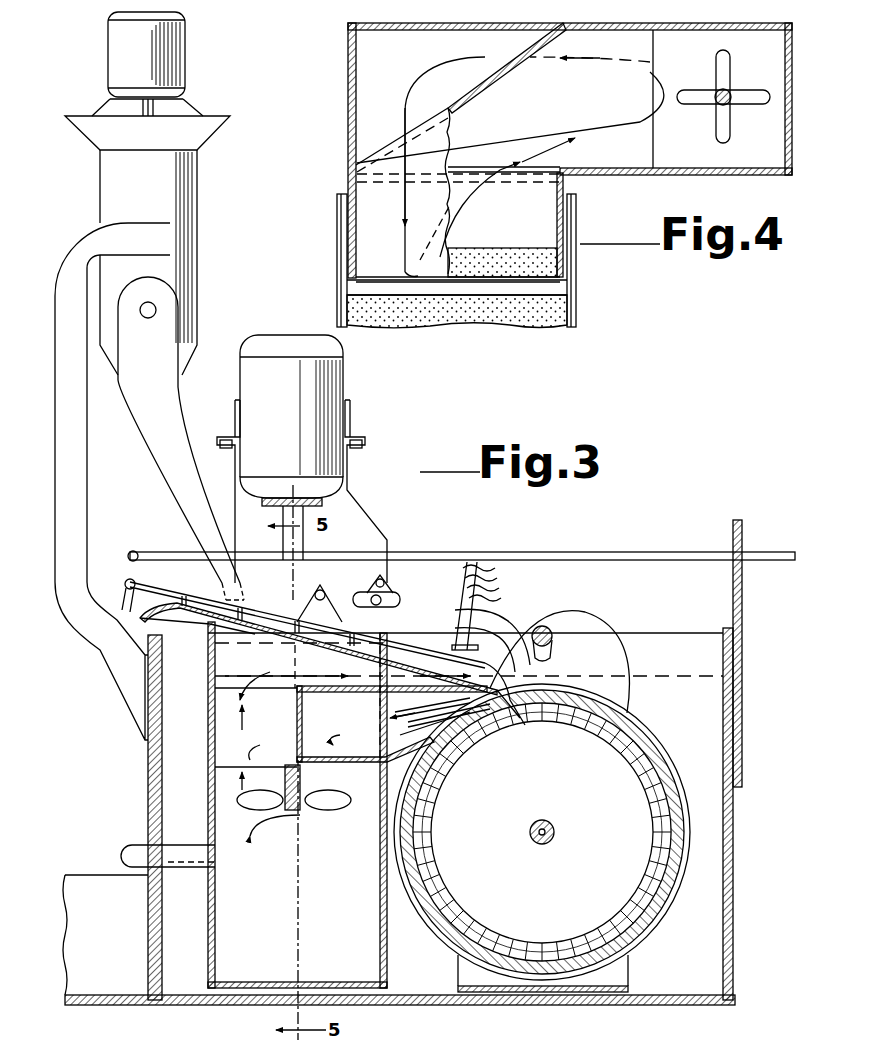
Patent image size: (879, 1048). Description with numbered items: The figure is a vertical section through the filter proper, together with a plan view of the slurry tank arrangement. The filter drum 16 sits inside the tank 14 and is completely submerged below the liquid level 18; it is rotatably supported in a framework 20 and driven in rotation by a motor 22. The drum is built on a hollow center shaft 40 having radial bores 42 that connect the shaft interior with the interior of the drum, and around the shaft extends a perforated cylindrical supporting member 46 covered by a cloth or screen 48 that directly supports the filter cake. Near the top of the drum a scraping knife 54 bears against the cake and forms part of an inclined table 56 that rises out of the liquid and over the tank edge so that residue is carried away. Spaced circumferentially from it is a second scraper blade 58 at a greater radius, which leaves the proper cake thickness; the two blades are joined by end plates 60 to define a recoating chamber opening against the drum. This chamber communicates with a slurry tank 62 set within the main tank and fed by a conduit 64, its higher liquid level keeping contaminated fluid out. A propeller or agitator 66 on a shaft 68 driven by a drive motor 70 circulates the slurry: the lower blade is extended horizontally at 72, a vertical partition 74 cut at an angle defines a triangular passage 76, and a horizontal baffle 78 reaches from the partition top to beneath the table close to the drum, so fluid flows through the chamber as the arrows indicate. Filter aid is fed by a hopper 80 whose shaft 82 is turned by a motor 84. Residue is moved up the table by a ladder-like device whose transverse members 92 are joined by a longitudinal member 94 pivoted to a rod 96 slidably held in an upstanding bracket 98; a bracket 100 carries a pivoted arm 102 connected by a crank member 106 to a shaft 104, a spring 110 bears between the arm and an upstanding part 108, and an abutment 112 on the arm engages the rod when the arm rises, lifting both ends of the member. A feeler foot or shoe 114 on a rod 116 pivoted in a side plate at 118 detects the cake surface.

In FIG. 4, the tank 14 is at (598, 174).
In FIG. 3, the tank 14 is at (733, 882).
In FIG. 4, the drum 16 is at (500, 320).
In FIG. 3, the drum 16 is at (655, 923).
In FIG. 3, the liquid level 18 is at (700, 670).
In FIG. 4, the framework 20 is at (576, 290).
In FIG. 3, the framework 20 is at (632, 968).
In FIG. 4, the motor 22 is at (528, 118).
In FIG. 3, the hollow center shaft 40 is at (556, 825).
In FIG. 3, the radial bores 42 is at (542, 820).
In FIG. 3, the cylindrical supporting member 46 is at (462, 898).
In FIG. 3, the cloth or screen 48 is at (432, 933).
In FIG. 4, the scraping knife 54 is at (382, 322).
In FIG. 3, the scraping knife 54 is at (545, 688).
In FIG. 4, the inclined table 56 is at (470, 295).
In FIG. 3, the inclined table 56 is at (520, 623).
In FIG. 4, the second scraper blade 58 is at (509, 238).
In FIG. 3, the second scraper blade 58 is at (334, 820).
In FIG. 4, the end plates 60 is at (360, 233).
In FIG. 3, the end plates 60 is at (443, 771).
In FIG. 4, the tank 62 is at (785, 50).
In FIG. 3, the tank 62 is at (380, 930).
In FIG. 3, the conduit 64 is at (180, 846).
In FIG. 4, the propeller or agitator 66 is at (730, 124).
In FIG. 3, the propeller or agitator 66 is at (265, 812).
In FIG. 4, the shaft 68 is at (715, 105).
In FIG. 3, the shaft 68 is at (305, 547).
In FIG. 3, the drive motor 70 is at (343, 383).
In FIG. 3, the horizontal extension of lower scraper blade 72 is at (332, 754).
In FIG. 4, the vertical partition 74 is at (548, 40).
In FIG. 3, the vertical partition 74 is at (296, 720).
In FIG. 4, the triangular passage 76 is at (413, 66).
In FIG. 3, the triangular passage 76 is at (282, 753).
In FIG. 4, the horizontal partition or baffle member 78 is at (396, 221).
In FIG. 3, the horizontal partition or baffle member 78 is at (312, 720).
In FIG. 3, the hopper 80 is at (197, 168).
In FIG. 3, the shaft 82 is at (152, 108).
In FIG. 3, the motor 84 is at (185, 50).
In FIG. 3, the transverse members 92 is at (236, 610).
In FIG. 3, the longitudinal member 94 is at (166, 576).
In FIG. 3, the rod 96 is at (136, 553).
In FIG. 3, the upstanding bracket 98 is at (742, 528).
In FIG. 3, the bracket 100 is at (300, 598).
In FIG. 3, the arm 102 is at (400, 596).
In FIG. 3, the shaft 104 is at (560, 628).
In FIG. 3, the crank member 106 is at (552, 643).
In FIG. 3, the upstanding part 108 is at (478, 610).
In FIG. 3, the spring 110 is at (490, 565).
In FIG. 3, the abutment 112 is at (386, 580).
In FIG. 3, the foot or shoe 114 is at (470, 733).
In FIG. 3, the rod 116 is at (447, 708).
In FIG. 3, the pivot 118 is at (439, 721).